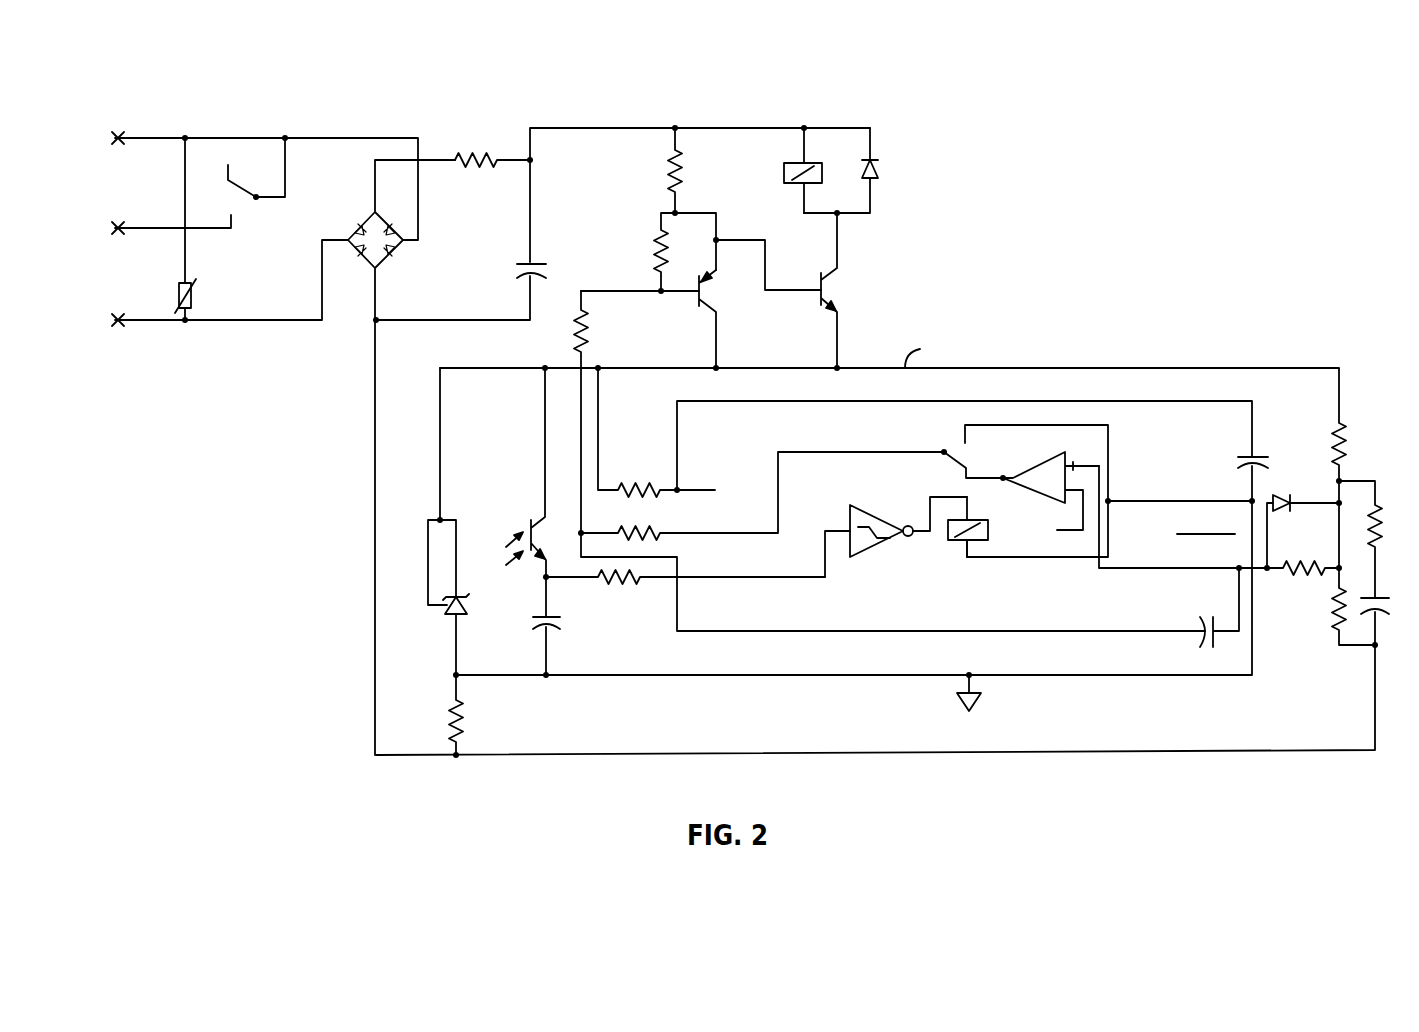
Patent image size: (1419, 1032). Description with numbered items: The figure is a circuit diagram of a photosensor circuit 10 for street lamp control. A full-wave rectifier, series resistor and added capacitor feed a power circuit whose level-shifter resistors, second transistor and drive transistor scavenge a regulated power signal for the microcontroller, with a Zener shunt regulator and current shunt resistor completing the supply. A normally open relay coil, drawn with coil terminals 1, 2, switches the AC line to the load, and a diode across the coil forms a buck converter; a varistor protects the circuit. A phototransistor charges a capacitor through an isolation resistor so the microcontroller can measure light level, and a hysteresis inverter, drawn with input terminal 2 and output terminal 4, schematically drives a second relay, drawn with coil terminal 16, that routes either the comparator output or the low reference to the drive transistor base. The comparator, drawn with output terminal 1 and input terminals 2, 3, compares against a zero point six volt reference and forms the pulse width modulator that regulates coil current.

The photosensor circuit 10 is at (765, 435).
The relay coil pin 1 is at (803, 170).
The inverter input pin 2 is at (869, 541).
The op amp non-inverting input pin 3 is at (1051, 488).
The inverter output pin 4 is at (938, 514).
The relay coil pin 16 is at (966, 531).